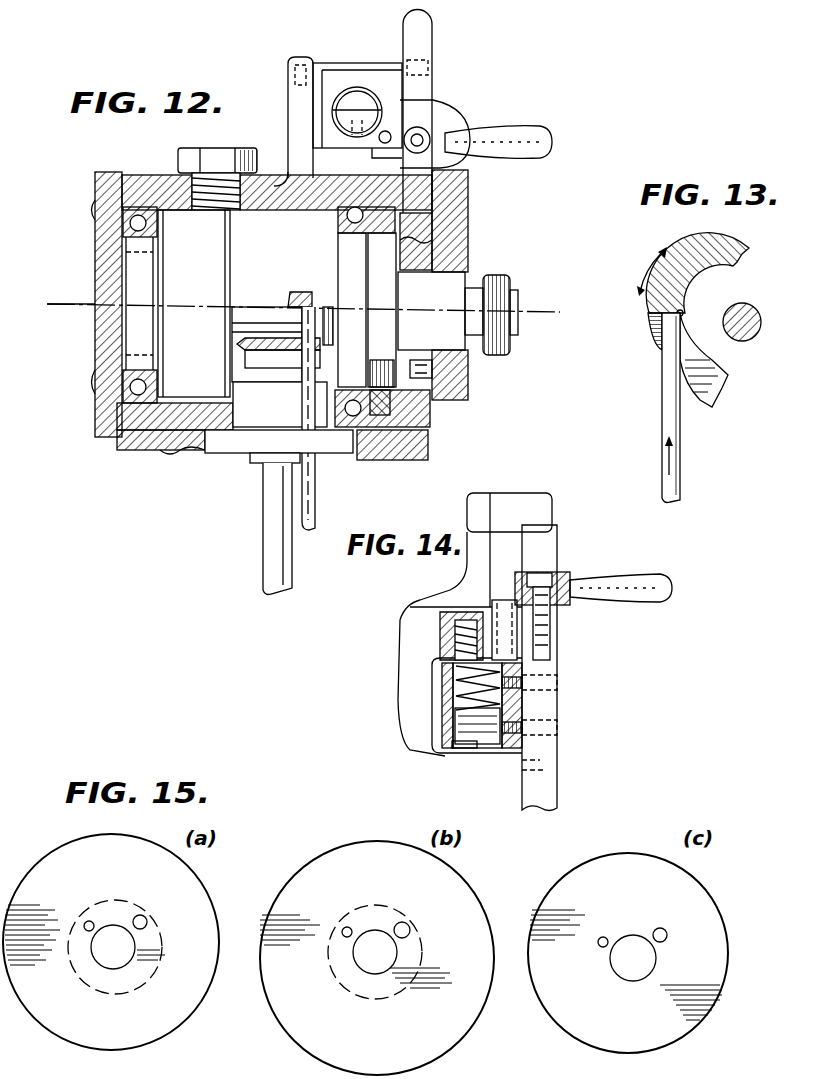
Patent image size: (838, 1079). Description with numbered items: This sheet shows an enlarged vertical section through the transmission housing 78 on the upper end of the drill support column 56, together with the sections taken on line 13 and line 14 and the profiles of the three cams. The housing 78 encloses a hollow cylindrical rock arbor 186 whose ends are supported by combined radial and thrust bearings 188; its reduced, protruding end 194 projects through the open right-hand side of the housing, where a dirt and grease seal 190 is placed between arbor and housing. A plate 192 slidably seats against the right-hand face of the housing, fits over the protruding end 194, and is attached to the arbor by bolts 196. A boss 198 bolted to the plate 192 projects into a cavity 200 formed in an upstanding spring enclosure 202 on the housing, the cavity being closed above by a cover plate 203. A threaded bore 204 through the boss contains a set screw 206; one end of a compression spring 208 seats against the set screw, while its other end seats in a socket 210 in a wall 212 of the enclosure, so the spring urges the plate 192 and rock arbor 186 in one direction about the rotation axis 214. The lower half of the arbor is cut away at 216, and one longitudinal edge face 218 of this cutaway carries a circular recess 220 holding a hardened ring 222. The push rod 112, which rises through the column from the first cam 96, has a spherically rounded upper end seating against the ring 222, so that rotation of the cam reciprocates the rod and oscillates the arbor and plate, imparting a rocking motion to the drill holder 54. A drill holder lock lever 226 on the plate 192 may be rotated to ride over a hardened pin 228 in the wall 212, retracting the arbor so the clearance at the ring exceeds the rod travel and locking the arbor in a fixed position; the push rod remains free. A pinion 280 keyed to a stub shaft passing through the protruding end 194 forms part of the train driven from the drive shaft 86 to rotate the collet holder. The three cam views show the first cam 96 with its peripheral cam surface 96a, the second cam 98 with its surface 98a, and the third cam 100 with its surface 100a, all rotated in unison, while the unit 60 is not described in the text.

In FIG. 12, the section line 13— 13 is at (313, 195).
In FIG. 12, the section line 14— 14 is at (300, 43).
In FIG. 12, the drill holder 54 is at (470, 254).
In FIG. 12, the drill support column 56 is at (170, 455).
In FIG. 12, the indexing mechanism 60 is at (80, 266).
In FIG. 12, the transmission housing 78 is at (95, 358).
In FIG. 14, the transmission housing 78 is at (482, 498).
In FIG. 12, the drive shaft 86 is at (268, 518).
In FIG. 15, the first cam 96 is at (698, 884).
In FIG. 15, the peripheral cam surface 96a is at (704, 1016).
In FIG. 15, the second cam 98 is at (456, 886).
In FIG. 15, the periphery of cam disk 98 98a is at (456, 1046).
In FIG. 15, the third cam 100 is at (198, 903).
In FIG. 15, the periphery of cam disk 100 100a is at (162, 1042).
In FIG. 12, the push rod 112 is at (312, 488).
In FIG. 13, the push rod 112 is at (682, 471).
In FIG. 12, the rock arbor 186 is at (243, 274).
In FIG. 13, the rock arbor 186 is at (700, 238).
In FIG. 12, the combined radial and thrust bearings 188 is at (150, 226).
In FIG. 12, the dirt and grease seal 190 is at (416, 241).
In FIG. 12, the plate 192 is at (428, 80).
In FIG. 14, the plate 192 is at (560, 708).
In FIG. 12, the reduced protruding end 194 is at (438, 322).
In FIG. 12, the bolts 196 is at (434, 370).
In FIG. 12, the boss 198 is at (388, 84).
In FIG. 14, the boss 198 is at (455, 715).
In FIG. 14, the cavity 200 is at (440, 698).
In FIG. 12, the spring enclosure 202 is at (290, 121).
In FIG. 14, the spring enclosure 202 is at (410, 672).
In FIG. 12, the cover plate 203 is at (380, 68).
In FIG. 12, the threaded bore 204 is at (290, 98).
In FIG. 14, the threaded bore 204 is at (455, 750).
In FIG. 12, the set screw 206 is at (350, 130).
In FIG. 14, the set screw 206 is at (468, 750).
In FIG. 14, the compression spring 208 is at (442, 644).
In FIG. 14, the socket 210 is at (440, 626).
In FIG. 14, the wall 212 is at (480, 612).
In FIG. 12, the rotation axis 214 is at (72, 307).
In FIG. 13, the rotation axis 214 is at (765, 305).
In FIG. 12, the cutaway 216 is at (233, 337).
In FIG. 13, the cutaway 216 is at (705, 372).
In FIG. 12, the longitudinal edge face 218 is at (263, 305).
In FIG. 13, the longitudinal edge face 218 is at (650, 322).
In FIG. 12, the circular recess 220 is at (322, 292).
In FIG. 13, the circular recess 220 is at (658, 352).
In FIG. 12, the hardened ring 222 is at (367, 310).
In FIG. 13, the hardened ring 222 is at (686, 313).
In FIG. 12, the drill holder lock lever 226 is at (518, 131).
In FIG. 14, the drill holder lock lever 226 is at (632, 576).
In FIG. 12, the hardened pin 228 is at (386, 144).
In FIG. 14, the hardened pin 228 is at (505, 600).
In FIG. 12, the pinion 280 is at (522, 270).